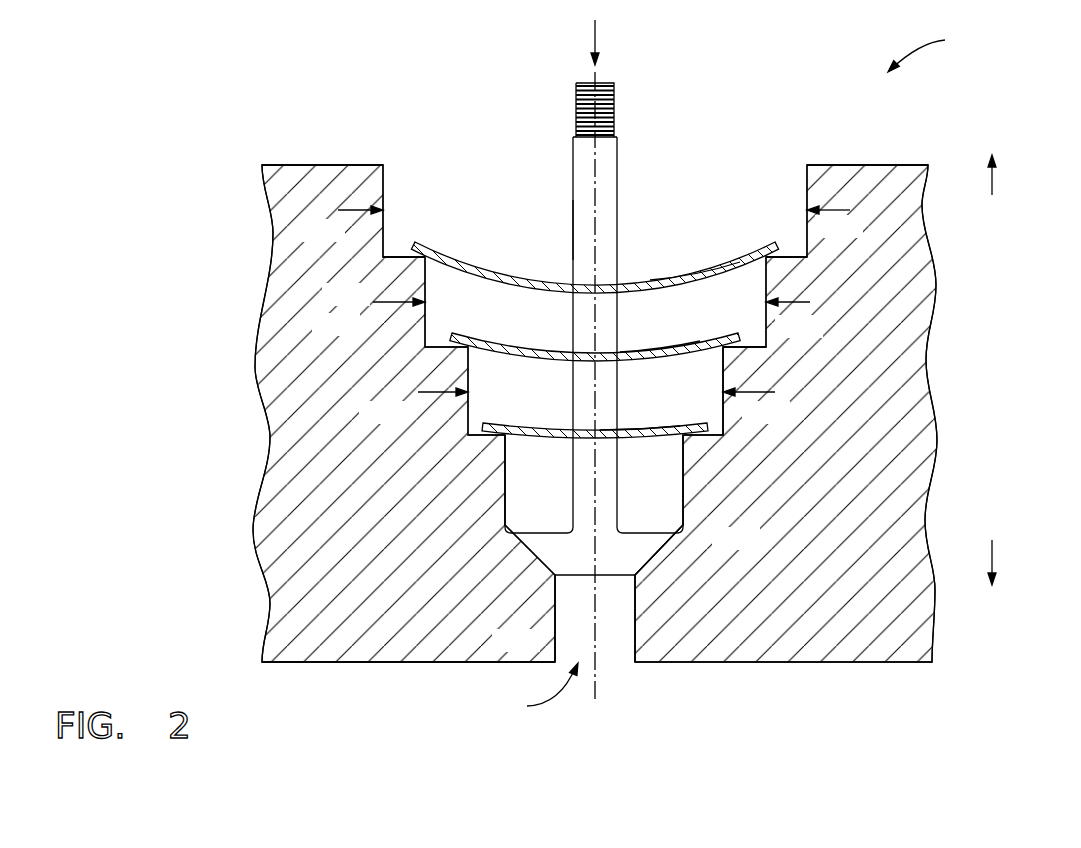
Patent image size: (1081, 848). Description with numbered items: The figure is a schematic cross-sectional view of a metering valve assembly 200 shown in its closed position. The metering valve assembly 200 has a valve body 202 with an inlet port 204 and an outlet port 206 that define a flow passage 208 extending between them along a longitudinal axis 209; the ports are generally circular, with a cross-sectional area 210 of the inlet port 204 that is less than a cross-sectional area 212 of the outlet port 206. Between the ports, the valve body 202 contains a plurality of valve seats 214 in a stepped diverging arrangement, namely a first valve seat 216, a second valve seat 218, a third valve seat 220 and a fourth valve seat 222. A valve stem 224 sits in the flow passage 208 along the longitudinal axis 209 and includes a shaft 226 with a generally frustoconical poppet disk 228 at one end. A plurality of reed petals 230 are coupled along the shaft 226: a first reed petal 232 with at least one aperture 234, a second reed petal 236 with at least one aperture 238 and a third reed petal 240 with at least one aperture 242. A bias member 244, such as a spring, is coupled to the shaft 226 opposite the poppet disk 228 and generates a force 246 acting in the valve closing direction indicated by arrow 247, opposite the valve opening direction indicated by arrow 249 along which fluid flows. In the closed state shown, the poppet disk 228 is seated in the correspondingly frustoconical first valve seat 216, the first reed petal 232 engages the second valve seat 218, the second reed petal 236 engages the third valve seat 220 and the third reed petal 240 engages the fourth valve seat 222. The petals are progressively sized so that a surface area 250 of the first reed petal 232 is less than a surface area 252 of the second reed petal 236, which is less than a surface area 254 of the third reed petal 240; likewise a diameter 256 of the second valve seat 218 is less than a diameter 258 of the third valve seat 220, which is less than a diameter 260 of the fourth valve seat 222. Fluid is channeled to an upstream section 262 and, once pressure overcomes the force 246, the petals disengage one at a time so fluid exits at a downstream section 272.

The metering valve assembly 200 is at (939, 50).
The valve body 202 is at (932, 350).
The inlet port 204 is at (531, 690).
The outlet port 206 is at (427, 150).
The flow passage 208 is at (578, 617).
The longitudinal axis 209 is at (598, 697).
The cross-sectional area of inlet port 210 is at (635, 664).
The cross-sectional area of outlet port 212 is at (807, 165).
The valve seats 214 is at (393, 266).
The first valve seat 216 is at (690, 532).
The second valve seat 218 is at (724, 428).
The third valve seat 220 is at (767, 347).
The fourth valve seat 222 is at (790, 257).
The valve stem 224 is at (641, 305).
The shaft 226 is at (617, 233).
The poppet disk 228 is at (625, 533).
The reed petals 230 is at (518, 208).
The first reed petal 232 is at (589, 408).
The aperture 234 is at (645, 428).
The second reed petal 236 is at (595, 337).
The aperture 238 is at (668, 348).
The third reed petal 240 is at (594, 259).
The aperture 242 is at (706, 269).
The bias member 244 is at (615, 97).
The force 246 is at (597, 34).
The arrow indicating valve closing direction 247 is at (994, 549).
The arrow indicating valve opening direction 249 is at (994, 178).
The surface area of first reed petal 250 is at (589, 408).
The surface area of second reed petal 252 is at (595, 337).
The surface area of third reed petal 254 is at (594, 259).
The diameter of second valve seat 256 is at (420, 393).
The diameter of third valve seat 258 is at (375, 303).
The diameter of fourth valve seat 260 is at (357, 212).
The upstream section 262 is at (287, 696).
The downstream section 272 is at (362, 141).